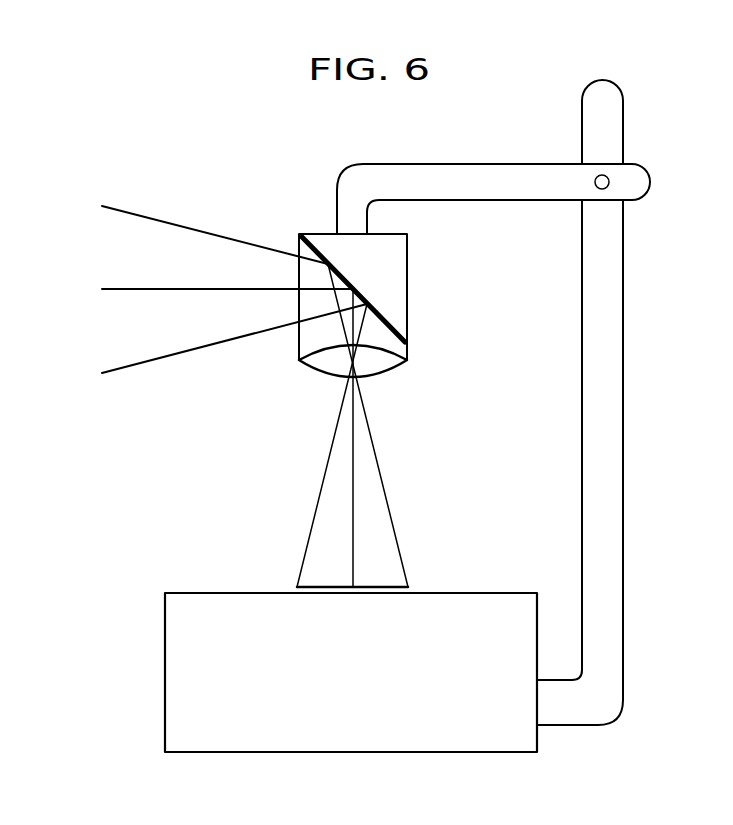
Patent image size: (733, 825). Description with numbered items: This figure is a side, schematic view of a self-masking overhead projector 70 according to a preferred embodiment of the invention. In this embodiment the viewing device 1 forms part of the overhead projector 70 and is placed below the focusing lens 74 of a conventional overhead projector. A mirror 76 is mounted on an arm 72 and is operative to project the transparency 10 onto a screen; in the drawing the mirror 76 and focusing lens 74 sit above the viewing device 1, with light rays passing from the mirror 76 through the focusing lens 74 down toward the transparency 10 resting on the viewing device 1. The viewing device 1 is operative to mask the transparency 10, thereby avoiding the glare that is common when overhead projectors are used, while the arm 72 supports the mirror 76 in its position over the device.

The viewing device 1 is at (165, 652).
The transparency 10 is at (327, 587).
The self-masking overhead projector 70 is at (170, 458).
The arm 72 is at (625, 372).
The focusing lens 74 is at (327, 378).
The mirror 76 is at (317, 247).